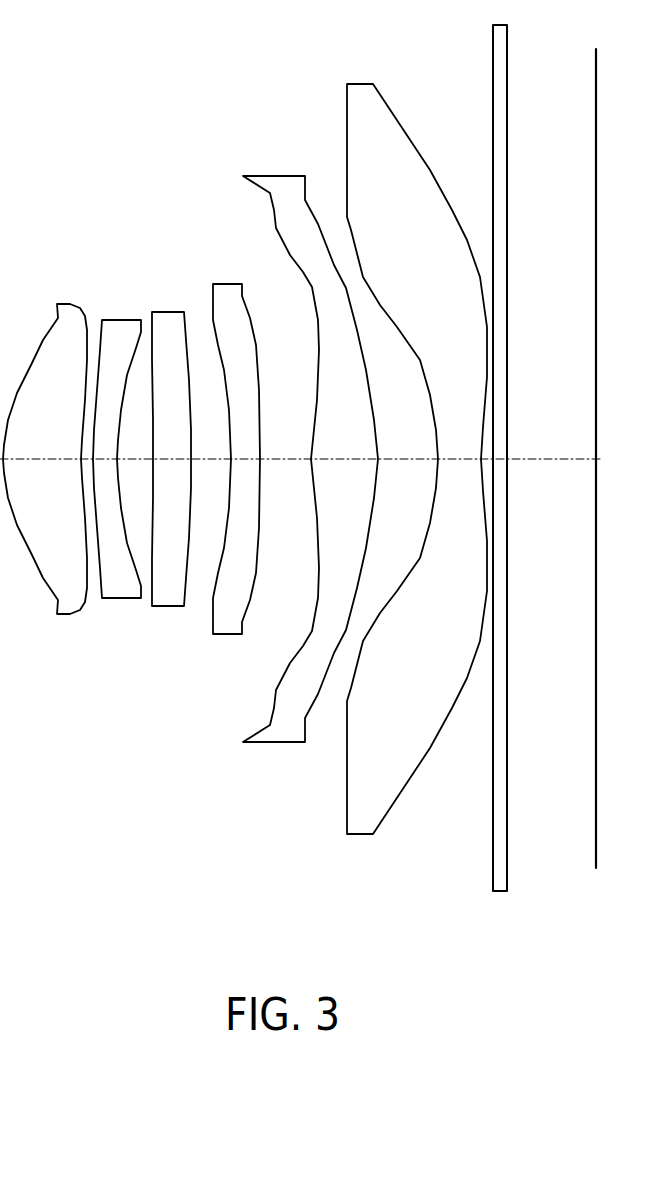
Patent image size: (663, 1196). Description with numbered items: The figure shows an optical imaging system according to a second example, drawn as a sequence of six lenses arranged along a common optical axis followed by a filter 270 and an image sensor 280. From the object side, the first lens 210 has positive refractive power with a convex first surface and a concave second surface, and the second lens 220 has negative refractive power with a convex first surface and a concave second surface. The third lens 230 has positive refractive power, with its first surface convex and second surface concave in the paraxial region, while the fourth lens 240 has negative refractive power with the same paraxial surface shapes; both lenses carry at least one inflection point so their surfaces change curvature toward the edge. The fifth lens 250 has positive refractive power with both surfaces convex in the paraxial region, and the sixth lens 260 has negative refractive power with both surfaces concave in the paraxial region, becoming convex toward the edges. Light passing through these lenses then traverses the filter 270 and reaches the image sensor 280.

The first lens 210 is at (62, 614).
The second lens 220 is at (122, 599).
The third lens 230 is at (166, 607).
The fourth lens 240 is at (229, 635).
The fifth lens 250 is at (277, 743).
The sixth lens 260 is at (362, 835).
The filter 270 is at (502, 892).
The image sensor 280 is at (595, 850).